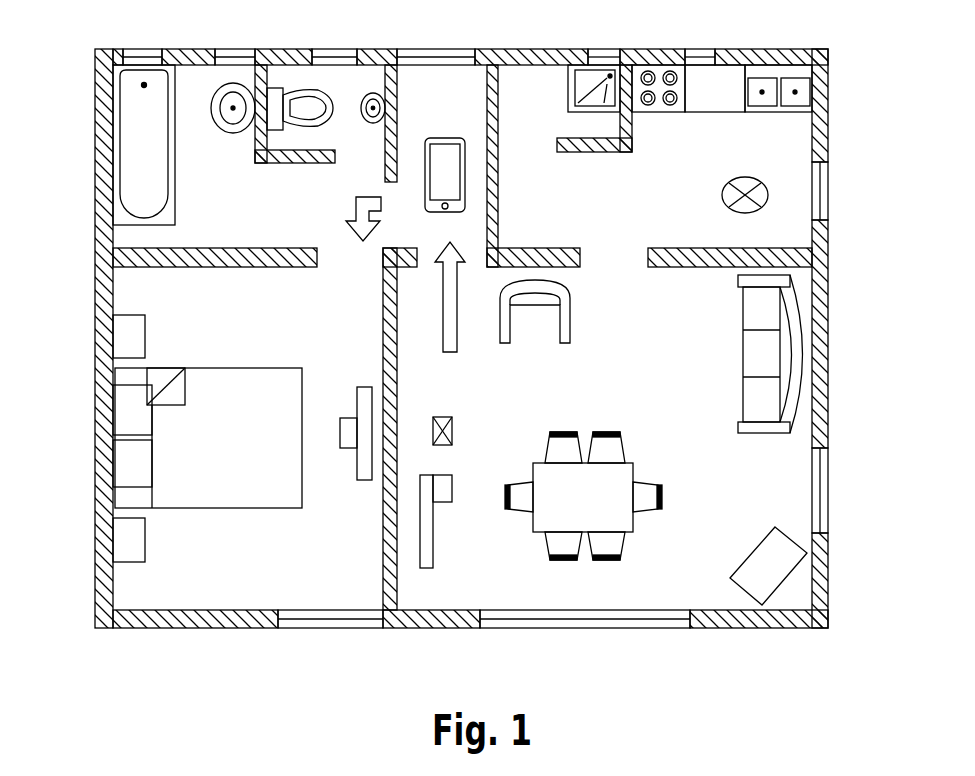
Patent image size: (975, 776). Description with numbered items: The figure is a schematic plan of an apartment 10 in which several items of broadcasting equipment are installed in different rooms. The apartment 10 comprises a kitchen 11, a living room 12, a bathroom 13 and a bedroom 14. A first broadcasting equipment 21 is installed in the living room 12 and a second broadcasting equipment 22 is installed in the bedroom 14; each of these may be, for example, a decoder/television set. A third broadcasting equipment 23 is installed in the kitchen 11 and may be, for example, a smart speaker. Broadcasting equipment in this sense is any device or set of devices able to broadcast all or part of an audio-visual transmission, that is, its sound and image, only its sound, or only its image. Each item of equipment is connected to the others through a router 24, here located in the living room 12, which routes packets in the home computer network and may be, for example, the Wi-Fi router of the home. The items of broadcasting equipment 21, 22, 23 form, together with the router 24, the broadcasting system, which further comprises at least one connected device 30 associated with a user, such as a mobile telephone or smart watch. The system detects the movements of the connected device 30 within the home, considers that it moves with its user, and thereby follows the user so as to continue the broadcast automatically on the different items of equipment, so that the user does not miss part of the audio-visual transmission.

The apartment 10 is at (846, 146).
The kitchen 11 is at (685, 170).
The living room 12 is at (614, 367).
The bathroom 13 is at (200, 175).
The bedroom 14 is at (237, 573).
The first broadcasting equipment 21 is at (449, 519).
The second broadcasting equipment 22 is at (328, 433).
The third broadcasting equipment 23 is at (766, 195).
The router 24 is at (452, 432).
The connected device 30 is at (445, 137).